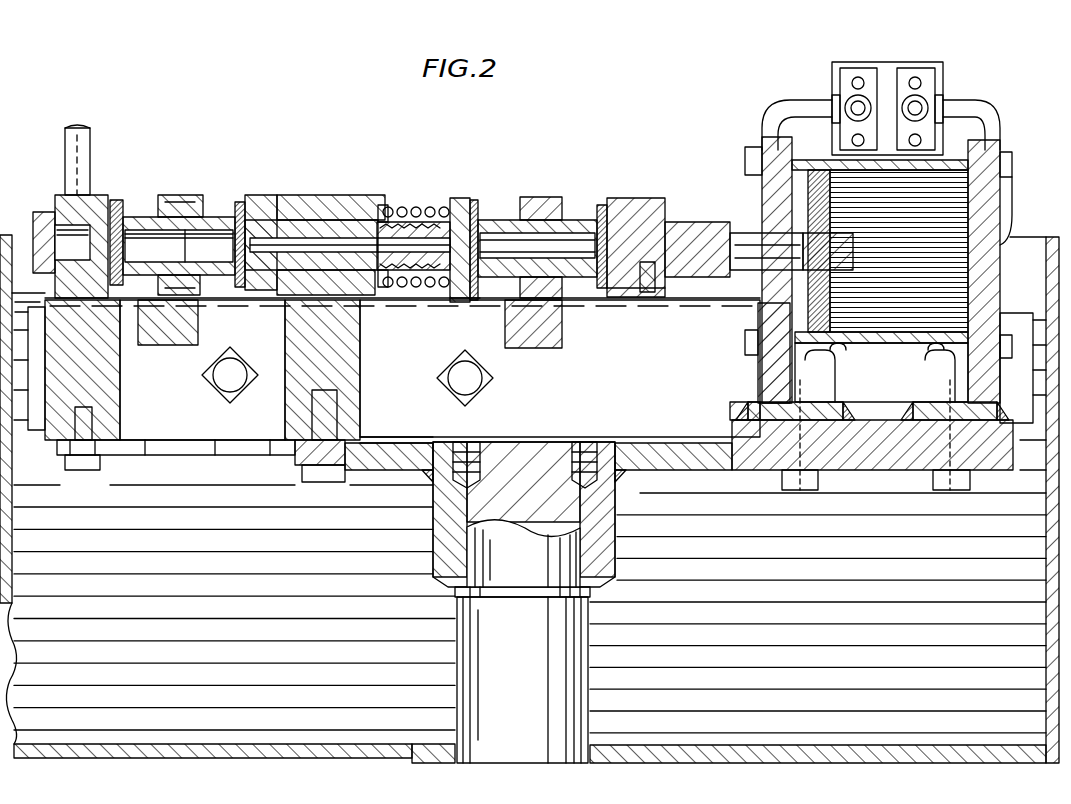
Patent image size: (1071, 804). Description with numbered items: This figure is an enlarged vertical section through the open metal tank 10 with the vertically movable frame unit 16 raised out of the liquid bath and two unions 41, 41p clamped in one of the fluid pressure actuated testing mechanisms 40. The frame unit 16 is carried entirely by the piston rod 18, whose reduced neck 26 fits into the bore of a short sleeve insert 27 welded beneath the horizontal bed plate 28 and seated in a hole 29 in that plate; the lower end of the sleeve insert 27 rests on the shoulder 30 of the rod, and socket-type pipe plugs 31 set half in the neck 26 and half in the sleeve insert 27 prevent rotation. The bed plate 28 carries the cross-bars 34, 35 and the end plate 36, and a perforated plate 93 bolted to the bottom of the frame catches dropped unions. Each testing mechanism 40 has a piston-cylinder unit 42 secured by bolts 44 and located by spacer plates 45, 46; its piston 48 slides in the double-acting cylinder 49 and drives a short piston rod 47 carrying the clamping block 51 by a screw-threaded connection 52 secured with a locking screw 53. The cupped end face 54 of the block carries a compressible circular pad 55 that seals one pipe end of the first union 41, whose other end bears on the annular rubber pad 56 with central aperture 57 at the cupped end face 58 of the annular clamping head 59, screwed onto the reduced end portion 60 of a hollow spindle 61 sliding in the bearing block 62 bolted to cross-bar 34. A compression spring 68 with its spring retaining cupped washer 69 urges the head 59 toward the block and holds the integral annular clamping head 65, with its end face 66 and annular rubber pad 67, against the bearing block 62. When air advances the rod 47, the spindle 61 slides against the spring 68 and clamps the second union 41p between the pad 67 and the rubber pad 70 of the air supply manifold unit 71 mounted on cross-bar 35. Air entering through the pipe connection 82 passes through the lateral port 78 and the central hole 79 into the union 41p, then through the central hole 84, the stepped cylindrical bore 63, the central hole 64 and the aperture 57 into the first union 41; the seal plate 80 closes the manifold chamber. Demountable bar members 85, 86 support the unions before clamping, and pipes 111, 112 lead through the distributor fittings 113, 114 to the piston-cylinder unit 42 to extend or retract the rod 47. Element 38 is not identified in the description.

The tank 10 is at (186, 748).
The frame unit 16 is at (640, 375).
The piston rod 18 is at (522, 680).
The neck 26 is at (525, 557).
The sleeve insert 27 is at (618, 572).
The bed plate 28 is at (630, 443).
The hole 29 is at (436, 440).
The shoulder 30 is at (455, 592).
The socket-type pipe plugs 31 is at (575, 442).
The cross-bar 34 is at (358, 370).
The cross-bar 35 is at (113, 408).
The end plate 36 is at (347, 386).
The spacer block 38 is at (730, 420).
The fluid pressure actuated testing mechanism 40 is at (653, 176).
The union 41 is at (535, 197).
The union 41p is at (158, 195).
The piston-cylinder unit 42 is at (920, 250).
The bolts 44 is at (925, 366).
The spacer plate 45 is at (765, 403).
The spacer plate 46 is at (915, 410).
The piston rod 47 is at (745, 233).
The piston 48 is at (853, 262).
The cylinder 49 is at (950, 160).
The clamping block 51 is at (620, 198).
The screw-threaded connection 52 is at (700, 222).
The locking screw 53 is at (648, 297).
The cupped end face 54 is at (612, 297).
The compressible circular pad 55 is at (601, 205).
The annular rubber pad 56 is at (476, 200).
The central aperture 57 is at (537, 248).
The cupped end face 58 is at (478, 298).
The annular clamping head 59 is at (460, 198).
The reduced end portion 60 is at (428, 222).
The hollow spindle 61 is at (284, 220).
The bearing block 62 is at (320, 195).
The stepped cylindrical bore 63 is at (393, 290).
The central hole 64 is at (450, 290).
The annular clamping head 65 is at (258, 195).
The end face 66 is at (240, 202).
The annular rubber pad 67 is at (200, 195).
The compression spring 68 is at (400, 207).
The spring retaining cupped washer 69 is at (383, 205).
The rubber pad 70 is at (118, 200).
The air supply manifold unit 71 is at (95, 195).
The lateral port 78 is at (72, 243).
The central hole 79 is at (179, 246).
The seal plate 80 is at (38, 212).
The pipe connection 82 is at (65, 135).
The central hole 84 is at (203, 249).
The bar member 85 is at (530, 348).
The bar member 86 is at (158, 345).
The perforated plate 93 is at (186, 440).
The pipe 111 is at (998, 118).
The pipe 112 is at (800, 100).
The fluid pressure distributor fitting 113 is at (920, 95).
The fluid pressure distributor fitting 114 is at (848, 95).